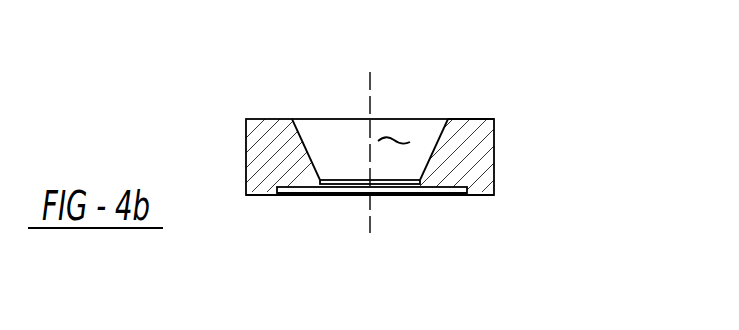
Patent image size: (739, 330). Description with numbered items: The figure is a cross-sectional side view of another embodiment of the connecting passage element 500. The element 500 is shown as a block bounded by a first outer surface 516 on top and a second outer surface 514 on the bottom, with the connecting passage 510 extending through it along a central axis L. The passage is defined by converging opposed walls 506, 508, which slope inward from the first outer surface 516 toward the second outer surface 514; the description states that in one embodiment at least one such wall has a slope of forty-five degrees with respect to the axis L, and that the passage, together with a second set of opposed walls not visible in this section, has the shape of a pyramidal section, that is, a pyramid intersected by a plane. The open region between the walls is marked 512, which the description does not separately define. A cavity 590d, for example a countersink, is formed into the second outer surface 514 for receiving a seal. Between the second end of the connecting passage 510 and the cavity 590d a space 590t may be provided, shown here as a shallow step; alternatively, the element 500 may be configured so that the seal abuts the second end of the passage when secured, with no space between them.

The connecting passage element 500 is at (577, 182).
The converging opposed wall 506 is at (308, 148).
The converging opposed wall 508 is at (437, 157).
The connecting passage 510 is at (357, 188).
The cavity / encapsulant region 512 is at (357, 129).
The second outer surface 514 is at (457, 196).
The first outer surface 516 is at (477, 119).
The space 590t is at (331, 180).
The cavity 590d is at (279, 187).
The axis L is at (373, 215).